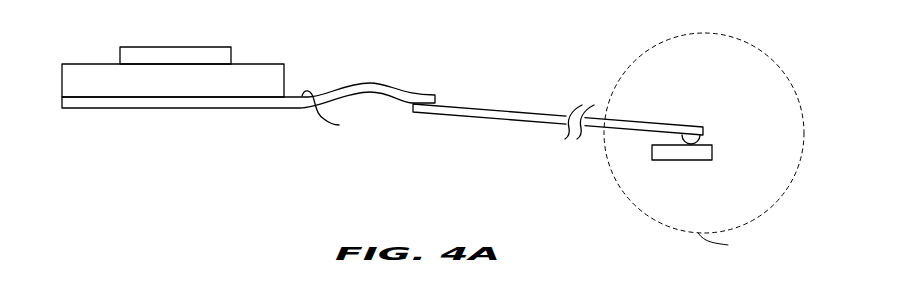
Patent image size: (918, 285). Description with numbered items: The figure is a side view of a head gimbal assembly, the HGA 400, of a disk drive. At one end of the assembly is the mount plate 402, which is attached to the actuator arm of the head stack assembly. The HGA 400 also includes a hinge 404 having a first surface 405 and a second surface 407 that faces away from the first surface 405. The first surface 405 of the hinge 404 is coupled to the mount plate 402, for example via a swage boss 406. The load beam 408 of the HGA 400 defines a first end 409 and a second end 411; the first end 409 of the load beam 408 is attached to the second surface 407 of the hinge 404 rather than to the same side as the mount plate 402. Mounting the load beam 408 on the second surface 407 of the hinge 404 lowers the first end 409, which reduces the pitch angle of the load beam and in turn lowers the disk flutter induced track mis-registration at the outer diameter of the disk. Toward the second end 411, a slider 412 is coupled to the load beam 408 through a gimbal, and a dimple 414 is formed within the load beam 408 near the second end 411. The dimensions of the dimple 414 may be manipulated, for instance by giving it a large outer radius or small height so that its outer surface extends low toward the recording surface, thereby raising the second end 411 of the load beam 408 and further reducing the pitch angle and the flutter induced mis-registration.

The HGA 400 is at (100, 170).
The mount plate 402 is at (253, 72).
The hinge 404 is at (383, 87).
The first surface 405 is at (337, 117).
The swage boss 406 is at (128, 59).
The second surface 407 is at (247, 108).
The load beam 408 is at (530, 108).
The first end 409 is at (424, 137).
The second end 411 is at (698, 106).
The slider 412 is at (702, 155).
The dimple 414 is at (703, 136).